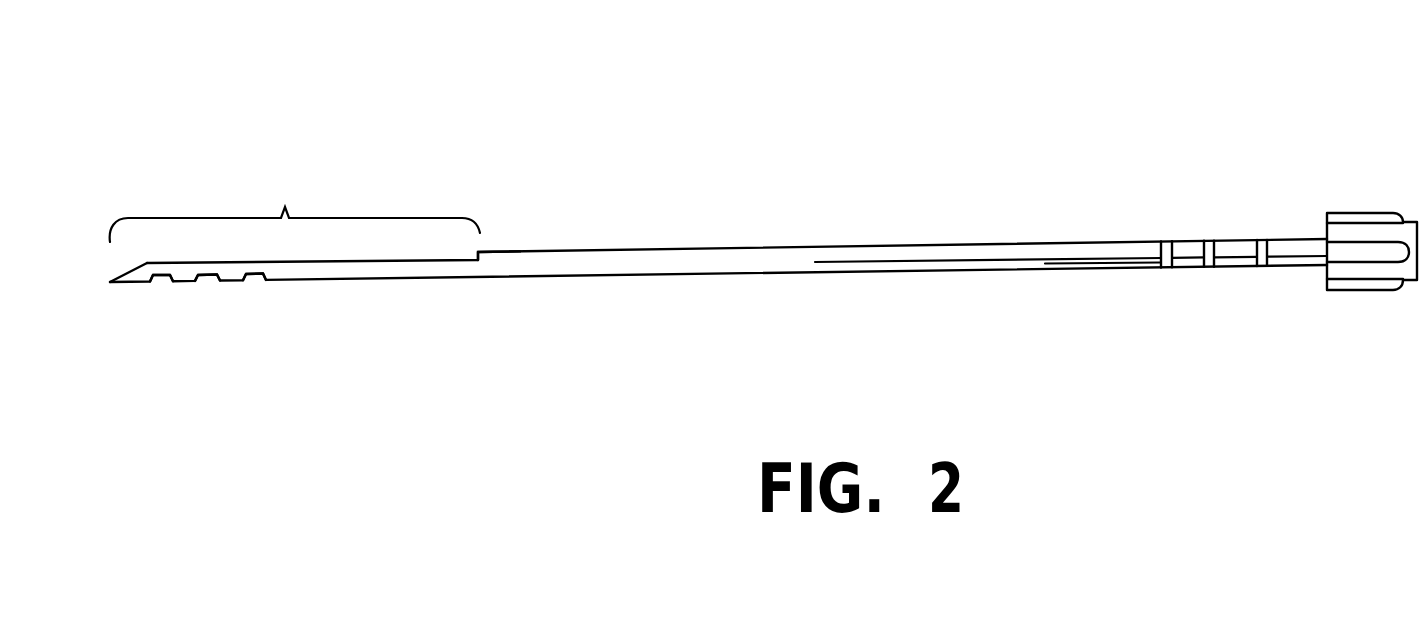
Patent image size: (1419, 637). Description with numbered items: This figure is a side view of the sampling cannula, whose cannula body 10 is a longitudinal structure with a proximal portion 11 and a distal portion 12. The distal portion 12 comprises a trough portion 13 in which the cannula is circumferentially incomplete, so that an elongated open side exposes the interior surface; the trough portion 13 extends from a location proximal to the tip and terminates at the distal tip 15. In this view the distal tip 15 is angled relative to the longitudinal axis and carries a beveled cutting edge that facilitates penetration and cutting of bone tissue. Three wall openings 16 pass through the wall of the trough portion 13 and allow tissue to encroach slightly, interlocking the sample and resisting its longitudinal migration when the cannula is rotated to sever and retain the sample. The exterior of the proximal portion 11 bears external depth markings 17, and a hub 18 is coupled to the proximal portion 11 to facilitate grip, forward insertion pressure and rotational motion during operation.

The cannula body 10 is at (950, 232).
The proximal portion 11 is at (1140, 242).
The distal portion 12 is at (507, 246).
The trough portion 13 is at (285, 207).
The distal tip 15 is at (115, 286).
The wall openings 16 is at (162, 286).
The depth markings 17 is at (1259, 267).
The hub 18 is at (1367, 213).